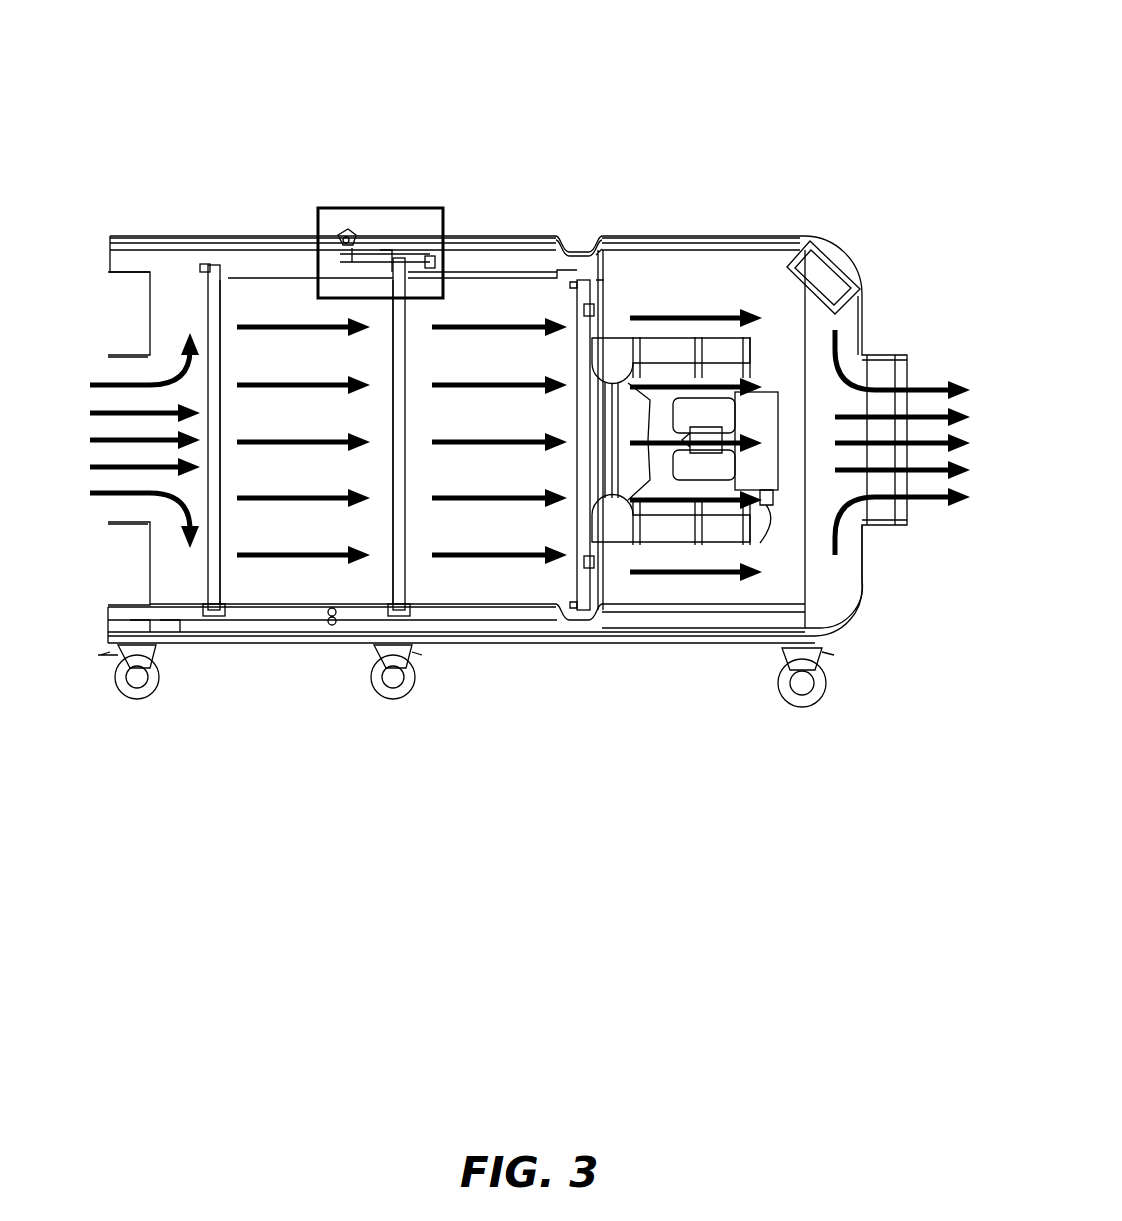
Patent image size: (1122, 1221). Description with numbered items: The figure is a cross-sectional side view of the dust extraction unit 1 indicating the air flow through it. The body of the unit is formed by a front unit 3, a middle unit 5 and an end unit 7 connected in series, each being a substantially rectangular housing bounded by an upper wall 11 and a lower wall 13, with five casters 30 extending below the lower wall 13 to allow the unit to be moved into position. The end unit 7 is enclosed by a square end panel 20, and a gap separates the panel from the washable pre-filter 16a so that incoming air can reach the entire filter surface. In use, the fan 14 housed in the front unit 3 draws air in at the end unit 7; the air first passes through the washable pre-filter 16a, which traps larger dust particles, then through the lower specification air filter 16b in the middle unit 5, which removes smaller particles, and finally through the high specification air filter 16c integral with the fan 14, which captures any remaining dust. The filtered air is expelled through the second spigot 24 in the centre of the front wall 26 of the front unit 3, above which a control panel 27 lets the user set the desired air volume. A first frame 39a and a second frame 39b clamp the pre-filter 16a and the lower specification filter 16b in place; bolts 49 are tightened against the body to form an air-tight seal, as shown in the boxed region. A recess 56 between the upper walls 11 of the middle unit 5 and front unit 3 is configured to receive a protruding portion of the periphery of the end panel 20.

The dust extraction unit 1 is at (727, 68).
The front unit 3 is at (764, 240).
The middle unit 5 is at (520, 237).
The end unit 7 is at (220, 237).
The upper wall 11 is at (262, 235).
The lower wall 13 is at (262, 648).
The fan 14 is at (717, 523).
The washable pre-filter 16a is at (296, 307).
The lower specification air filter 16b is at (540, 292).
The high specification air filter 16c is at (598, 240).
The end panel 20 is at (106, 295).
The second spigot 24 is at (905, 525).
The front wall 26 is at (865, 346).
The control panel 27 is at (849, 284).
The caster 30 is at (140, 692).
The first frame 39a is at (208, 307).
The second frame 39b is at (398, 270).
The bolt 49 is at (203, 262).
The recess 56 is at (573, 242).